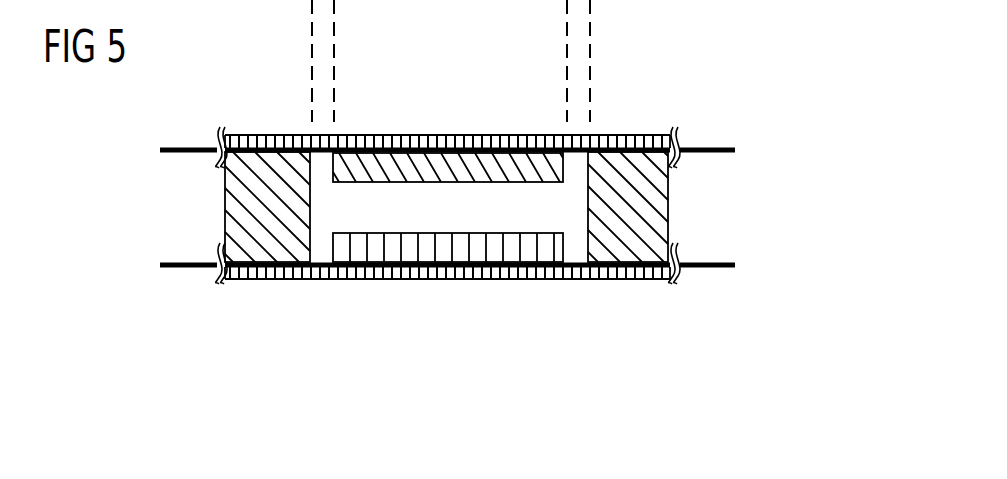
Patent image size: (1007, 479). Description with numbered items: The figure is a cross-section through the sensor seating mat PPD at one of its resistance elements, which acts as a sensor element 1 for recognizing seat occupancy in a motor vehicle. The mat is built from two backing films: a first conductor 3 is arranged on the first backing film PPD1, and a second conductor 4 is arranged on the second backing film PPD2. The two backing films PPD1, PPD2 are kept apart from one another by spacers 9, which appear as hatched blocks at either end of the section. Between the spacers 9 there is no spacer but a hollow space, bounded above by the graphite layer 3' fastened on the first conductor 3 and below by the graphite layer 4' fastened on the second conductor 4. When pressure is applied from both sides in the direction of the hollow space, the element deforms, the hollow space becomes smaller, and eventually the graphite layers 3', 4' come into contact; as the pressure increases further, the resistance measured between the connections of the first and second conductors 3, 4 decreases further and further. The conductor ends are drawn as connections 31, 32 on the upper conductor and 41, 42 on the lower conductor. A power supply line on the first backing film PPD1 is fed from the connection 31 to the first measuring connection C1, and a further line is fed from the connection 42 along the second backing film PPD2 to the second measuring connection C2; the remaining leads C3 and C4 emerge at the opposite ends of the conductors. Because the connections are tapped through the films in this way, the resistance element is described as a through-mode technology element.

The sensor element 1 is at (343, 380).
The first conductor 3 is at (447, 116).
The graphite layer 3' is at (448, 132).
The second conductor 4 is at (447, 302).
The graphite layer 4' is at (448, 285).
The spacer 9 is at (293, 163).
The connection 31 is at (252, 134).
The second contact end of first electrode 32 is at (651, 134).
The first contact end of second electrode 41 is at (246, 280).
The connection 42 is at (643, 280).
The sensor seating mat PPD is at (772, 207).
The first backing film PPD1 is at (383, 134).
The second backing film PPD2 is at (367, 280).
The first measuring connection C1 is at (171, 151).
The second measuring connection C2 is at (723, 267).
The third terminal C3 is at (723, 152).
The fourth terminal C4 is at (171, 266).